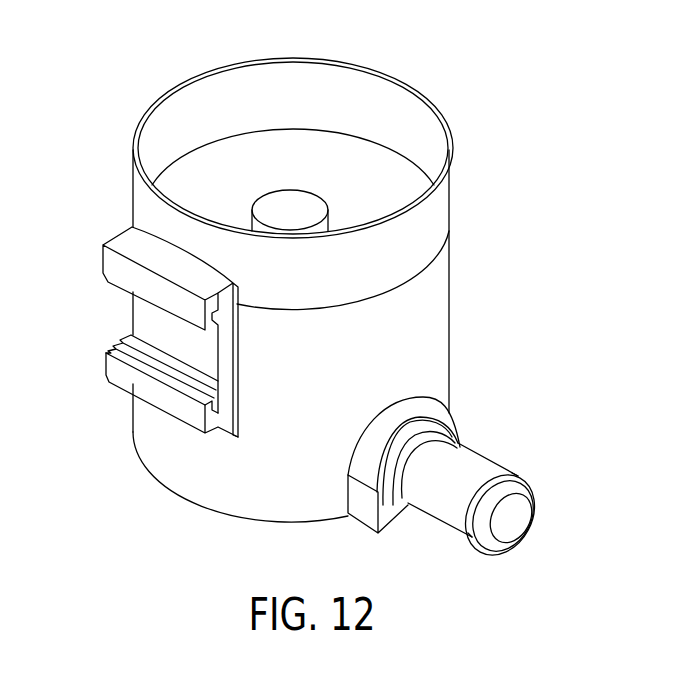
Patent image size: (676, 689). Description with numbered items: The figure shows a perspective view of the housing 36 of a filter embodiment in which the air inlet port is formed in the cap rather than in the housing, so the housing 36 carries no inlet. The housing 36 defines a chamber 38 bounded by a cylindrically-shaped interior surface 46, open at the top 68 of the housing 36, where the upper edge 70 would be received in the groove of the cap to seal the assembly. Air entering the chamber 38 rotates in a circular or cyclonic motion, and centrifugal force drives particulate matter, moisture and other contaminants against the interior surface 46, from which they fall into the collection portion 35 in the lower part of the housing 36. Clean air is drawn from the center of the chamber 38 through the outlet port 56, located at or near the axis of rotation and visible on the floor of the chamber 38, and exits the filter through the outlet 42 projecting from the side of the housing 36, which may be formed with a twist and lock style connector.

The collection portion 35 is at (112, 442).
The housing 36 is at (440, 338).
The chamber 38 is at (199, 190).
The outlet 42 is at (516, 460).
The interior surface 46 is at (362, 163).
The outlet port 56 is at (298, 200).
The top 68 is at (514, 238).
The upper edge 70 is at (145, 157).